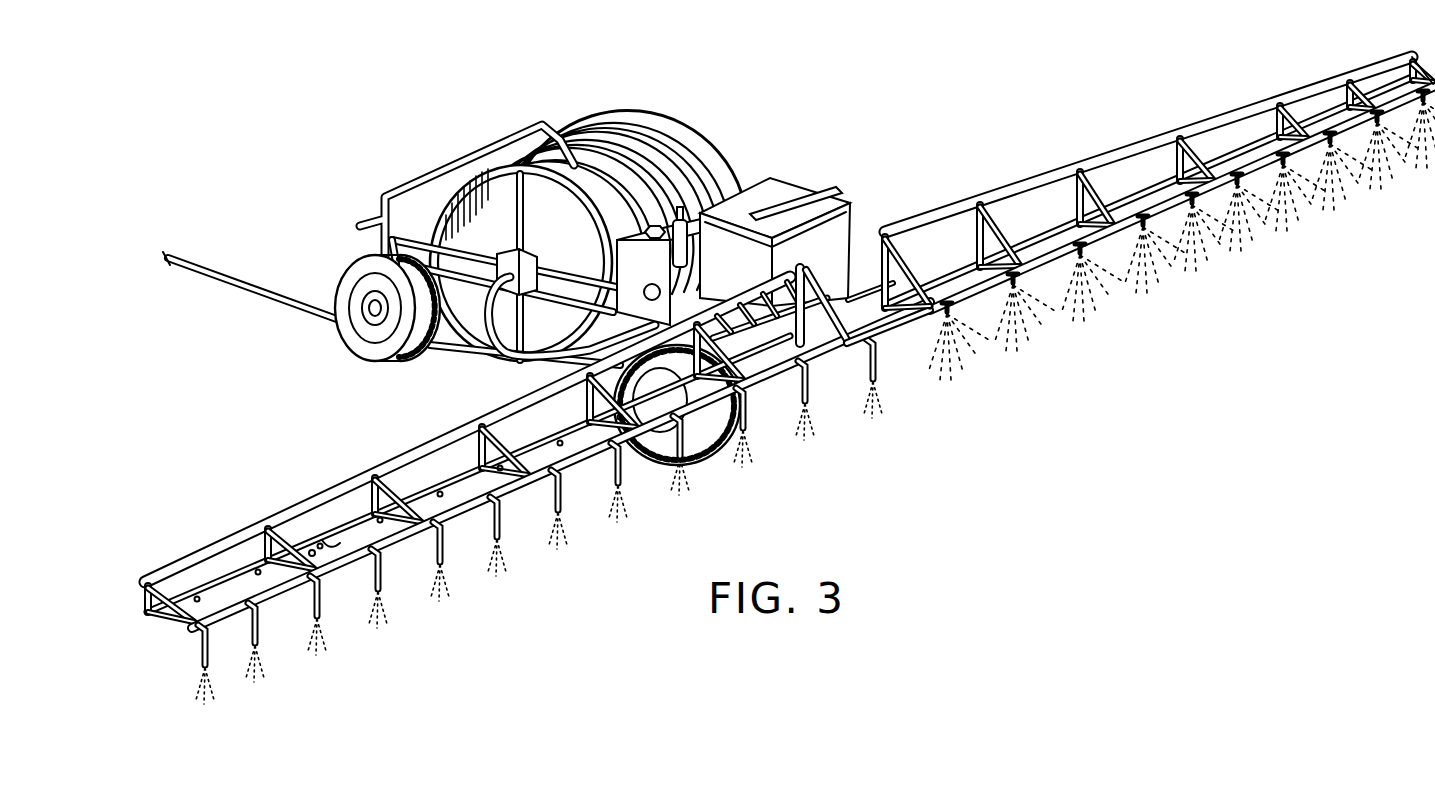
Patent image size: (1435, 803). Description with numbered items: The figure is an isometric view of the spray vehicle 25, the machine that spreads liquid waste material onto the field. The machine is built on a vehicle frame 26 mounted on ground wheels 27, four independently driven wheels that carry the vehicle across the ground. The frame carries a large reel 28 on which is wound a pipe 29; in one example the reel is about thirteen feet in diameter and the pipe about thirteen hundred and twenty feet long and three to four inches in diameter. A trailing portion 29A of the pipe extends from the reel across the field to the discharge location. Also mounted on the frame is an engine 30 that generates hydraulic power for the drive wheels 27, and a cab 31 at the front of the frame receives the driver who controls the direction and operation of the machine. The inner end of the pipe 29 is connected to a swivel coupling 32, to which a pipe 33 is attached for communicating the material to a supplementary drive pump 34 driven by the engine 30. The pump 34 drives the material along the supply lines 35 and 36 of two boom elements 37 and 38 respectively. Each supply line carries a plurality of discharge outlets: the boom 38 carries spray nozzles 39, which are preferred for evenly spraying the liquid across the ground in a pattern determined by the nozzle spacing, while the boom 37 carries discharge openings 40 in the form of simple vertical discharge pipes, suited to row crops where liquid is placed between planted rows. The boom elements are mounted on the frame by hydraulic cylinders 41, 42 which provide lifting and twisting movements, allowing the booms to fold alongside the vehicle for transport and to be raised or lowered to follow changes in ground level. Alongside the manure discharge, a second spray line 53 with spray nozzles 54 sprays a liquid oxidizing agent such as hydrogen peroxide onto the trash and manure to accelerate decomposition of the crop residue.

The spray vehicle 25 is at (814, 141).
The vehicle frame 26 is at (521, 133).
The ground wheels 27 is at (365, 342).
The reel 28 is at (655, 125).
The pipe 29 is at (668, 166).
The trailing portion 29A is at (197, 262).
The engine 30 is at (735, 180).
The cab 31 is at (838, 198).
The swivel coupling 32 is at (520, 332).
The pipe 33 is at (522, 240).
The supplementary drive pump 34 is at (661, 291).
The supply line 35 is at (585, 462).
The supply line 36 is at (963, 294).
The boom element 37 is at (537, 490).
The boom element 38 is at (1160, 219).
The spray nozzles 39 is at (1016, 282).
The discharge openings 40 is at (553, 507).
The hydraulic cylinder 41 is at (748, 365).
The hydraulic cylinder 42 is at (775, 268).
The second spray line 53 is at (323, 545).
The spray nozzles 54 is at (312, 550).